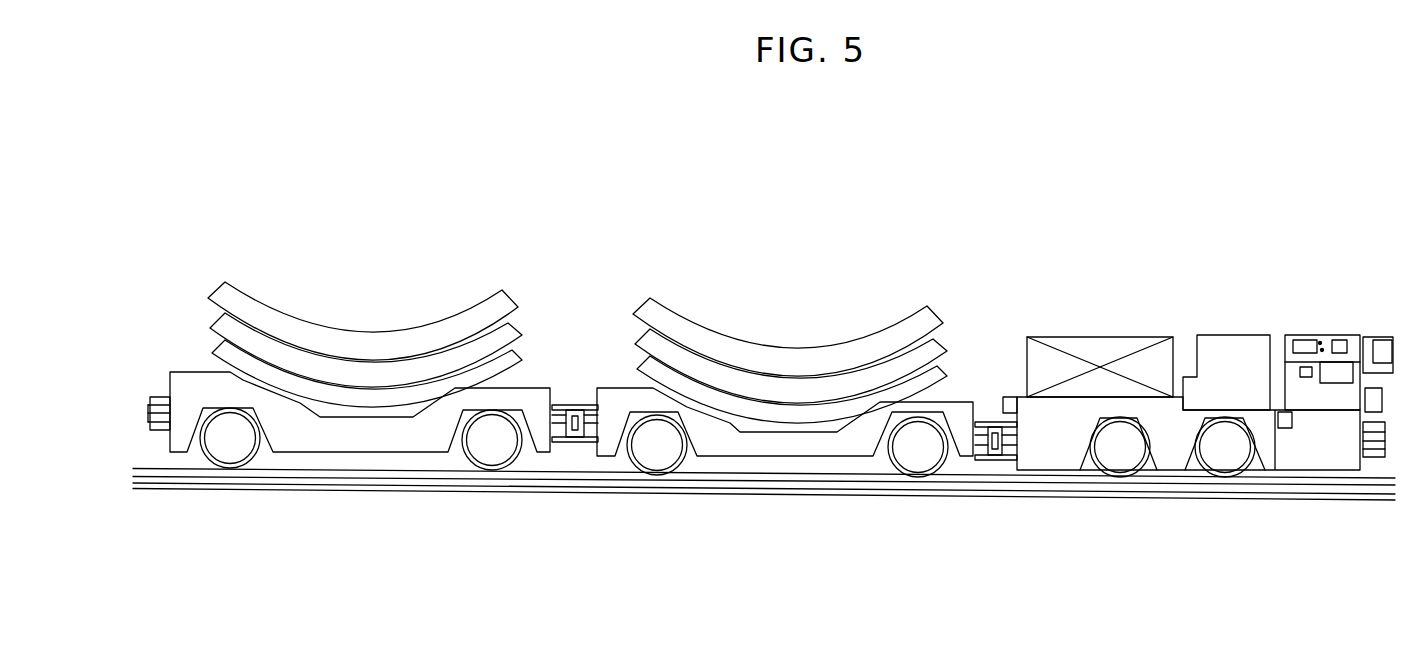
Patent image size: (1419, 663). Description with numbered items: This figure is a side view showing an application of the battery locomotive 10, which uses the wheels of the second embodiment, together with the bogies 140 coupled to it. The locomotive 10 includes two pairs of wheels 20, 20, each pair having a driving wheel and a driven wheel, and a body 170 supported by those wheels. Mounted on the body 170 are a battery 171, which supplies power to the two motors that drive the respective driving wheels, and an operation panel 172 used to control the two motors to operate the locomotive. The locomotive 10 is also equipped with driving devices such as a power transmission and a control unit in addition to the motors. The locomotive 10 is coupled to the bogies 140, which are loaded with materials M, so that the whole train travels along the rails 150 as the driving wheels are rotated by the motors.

The battery locomotive 10 is at (1198, 409).
The wheels 20 is at (1118, 462).
The bogies 140 is at (178, 352).
The rails 150 is at (150, 467).
The body 170 is at (1170, 462).
The battery 171 is at (1100, 357).
The operation panel 172 is at (1326, 336).
The materials M is at (293, 327).